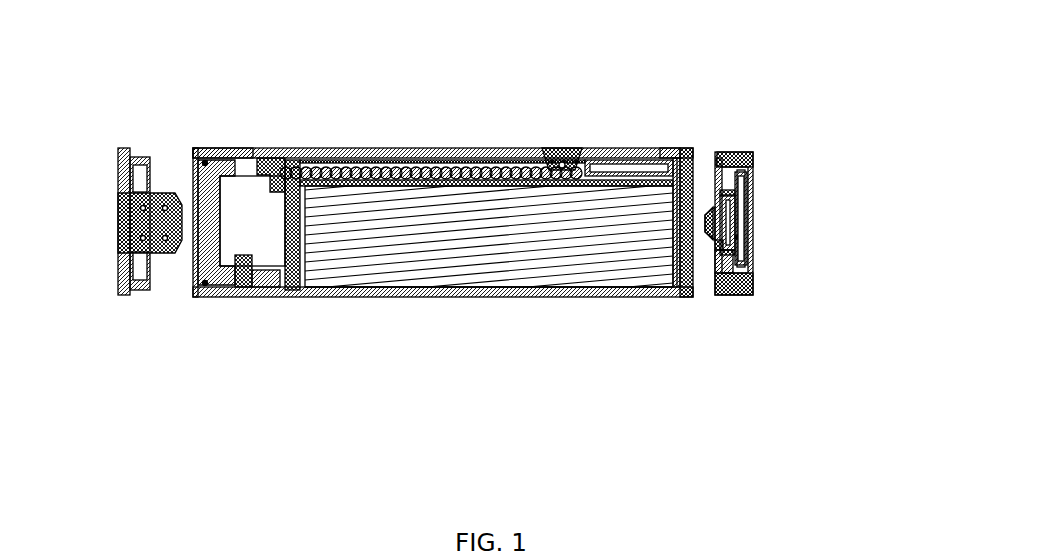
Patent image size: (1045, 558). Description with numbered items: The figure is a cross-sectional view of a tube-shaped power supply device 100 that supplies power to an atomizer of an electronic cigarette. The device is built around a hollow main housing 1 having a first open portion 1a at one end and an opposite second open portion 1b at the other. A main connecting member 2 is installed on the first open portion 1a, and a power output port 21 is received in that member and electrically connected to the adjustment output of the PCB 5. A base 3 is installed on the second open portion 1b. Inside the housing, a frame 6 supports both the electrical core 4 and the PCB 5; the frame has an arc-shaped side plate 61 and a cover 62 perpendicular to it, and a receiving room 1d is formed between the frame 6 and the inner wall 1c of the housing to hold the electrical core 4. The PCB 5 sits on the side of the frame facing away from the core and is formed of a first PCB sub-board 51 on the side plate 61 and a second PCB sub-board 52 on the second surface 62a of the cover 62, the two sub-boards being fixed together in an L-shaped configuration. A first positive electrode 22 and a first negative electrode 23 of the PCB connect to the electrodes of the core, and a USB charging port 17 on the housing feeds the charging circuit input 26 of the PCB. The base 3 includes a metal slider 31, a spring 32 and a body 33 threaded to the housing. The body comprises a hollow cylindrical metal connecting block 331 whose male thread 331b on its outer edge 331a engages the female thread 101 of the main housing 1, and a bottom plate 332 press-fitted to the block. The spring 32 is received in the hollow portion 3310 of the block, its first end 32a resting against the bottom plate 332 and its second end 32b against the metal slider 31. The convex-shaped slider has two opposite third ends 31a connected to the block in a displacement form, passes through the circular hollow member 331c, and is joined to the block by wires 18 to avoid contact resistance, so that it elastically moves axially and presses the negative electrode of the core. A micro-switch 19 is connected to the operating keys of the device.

The tube-shaped power supply device 100 is at (438, 406).
The main housing 1 is at (537, 297).
The first open portion 1a is at (203, 147).
The second open portion 1b is at (662, 156).
The inner wall 1c is at (468, 298).
The receiving room 1d is at (633, 237).
The female thread 101 is at (642, 280).
The main connecting member 2 is at (107, 233).
The power output port 21 is at (118, 155).
The USB charging port 17 is at (223, 298).
The wires 18 is at (724, 151).
The micro-switch 19 is at (573, 152).
The first positive electrode 22 is at (290, 298).
The first negative electrode 23 is at (708, 233).
The charging circuit input 26 is at (245, 288).
The base 3 is at (808, 218).
The metal slider 31 is at (743, 155).
The third ends 31a is at (730, 294).
The spring 32 is at (776, 233).
The first end of spring 32a is at (722, 294).
The second end of spring 32b is at (755, 225).
The body 33 is at (808, 186).
The metal connecting block 331 is at (782, 186).
The outer edge 331a is at (732, 165).
The male thread 331b is at (716, 158).
The circular hollow member 331c is at (753, 257).
The hollow portion 3310 is at (757, 232).
The bottom plate 332 is at (740, 232).
The electrical core 4 is at (427, 257).
The PCB 5 is at (431, 89).
The first PCB sub-board 51 is at (390, 167).
The second PCB sub-board 52 is at (322, 166).
The frame 6 is at (486, 88).
The side plate 61 is at (557, 114).
The cover 62 is at (405, 163).
The second surface 62a is at (300, 262).